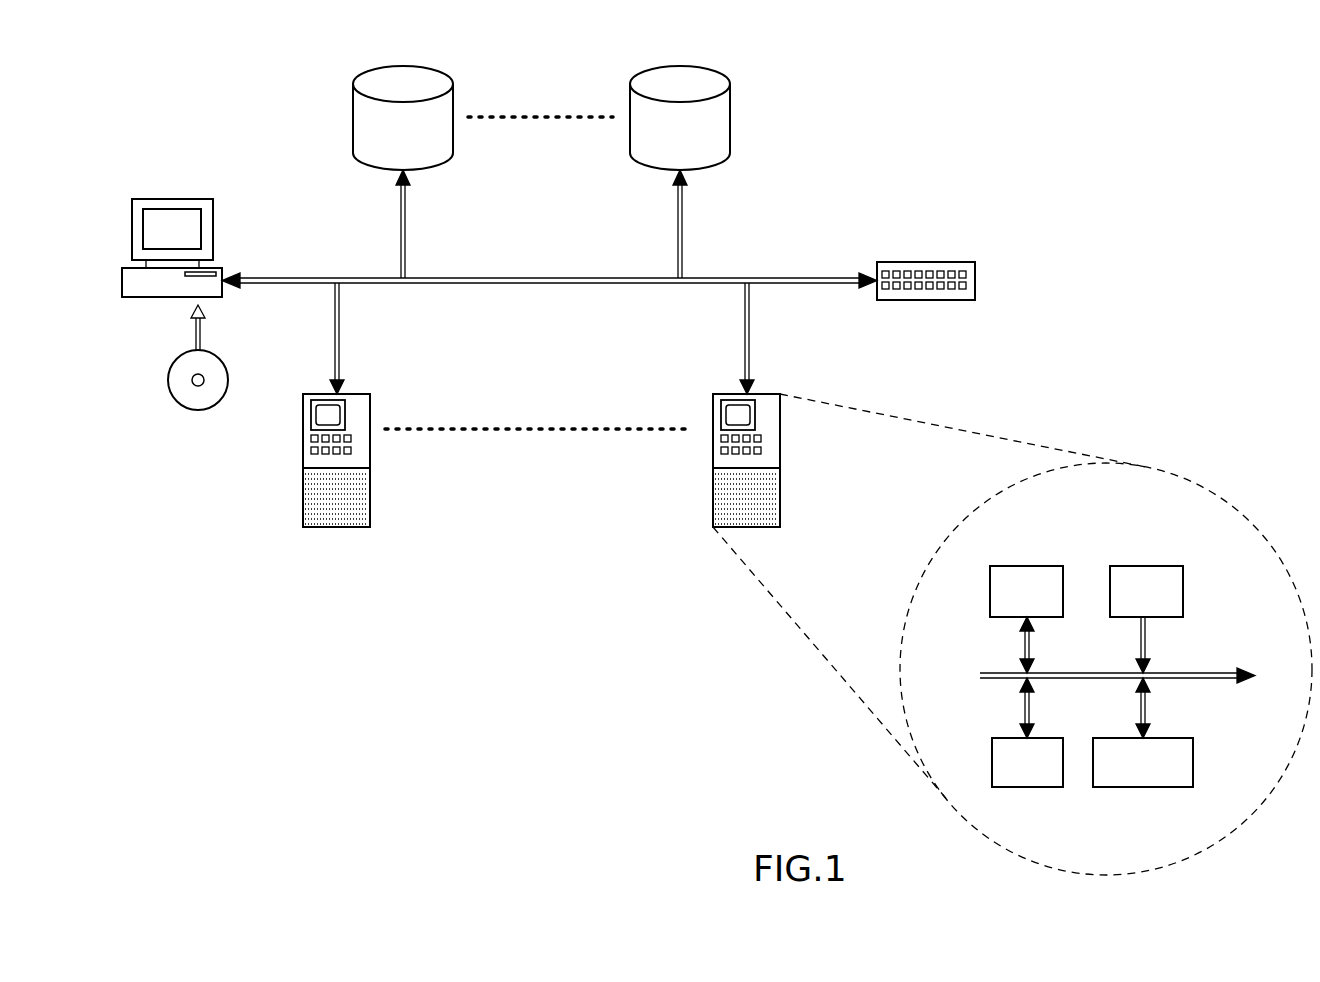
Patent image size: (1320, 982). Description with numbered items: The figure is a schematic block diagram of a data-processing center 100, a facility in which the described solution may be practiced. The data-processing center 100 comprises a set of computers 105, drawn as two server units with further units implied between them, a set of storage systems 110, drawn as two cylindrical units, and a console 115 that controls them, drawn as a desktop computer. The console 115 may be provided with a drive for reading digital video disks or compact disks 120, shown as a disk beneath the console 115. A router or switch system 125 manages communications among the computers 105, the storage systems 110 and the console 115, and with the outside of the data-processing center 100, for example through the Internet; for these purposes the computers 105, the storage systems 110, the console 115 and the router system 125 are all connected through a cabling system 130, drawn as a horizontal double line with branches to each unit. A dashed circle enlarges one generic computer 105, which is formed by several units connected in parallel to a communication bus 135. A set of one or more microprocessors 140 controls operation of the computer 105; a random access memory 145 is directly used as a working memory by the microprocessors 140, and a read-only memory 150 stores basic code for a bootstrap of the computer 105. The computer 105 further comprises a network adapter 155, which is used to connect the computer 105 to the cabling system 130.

The data-processing center 100 is at (1112, 143).
The computer 105 is at (370, 497).
The storage system 110 is at (377, 167).
The console 115 is at (146, 199).
The digital video disk or compact disk 120 is at (208, 408).
The router system 125 is at (930, 262).
The cabling system 130 is at (512, 284).
The communication bus 135 is at (1213, 680).
The microprocessor 140 is at (1038, 566).
The random access memory 145 is at (1028, 787).
The read-only memory 150 is at (1155, 566).
The network adapter 155 is at (1150, 787).